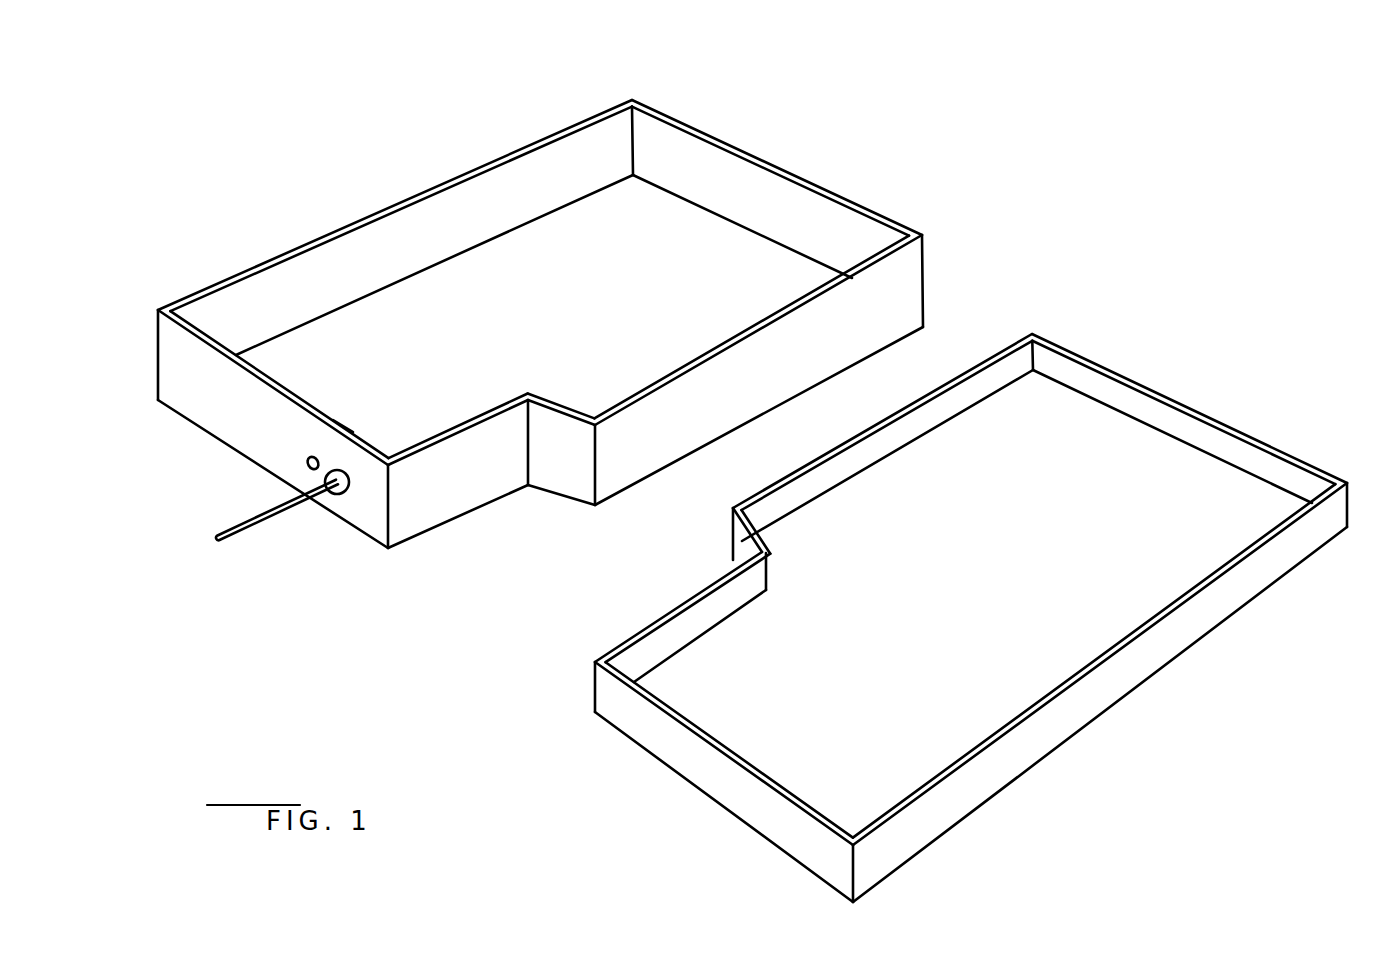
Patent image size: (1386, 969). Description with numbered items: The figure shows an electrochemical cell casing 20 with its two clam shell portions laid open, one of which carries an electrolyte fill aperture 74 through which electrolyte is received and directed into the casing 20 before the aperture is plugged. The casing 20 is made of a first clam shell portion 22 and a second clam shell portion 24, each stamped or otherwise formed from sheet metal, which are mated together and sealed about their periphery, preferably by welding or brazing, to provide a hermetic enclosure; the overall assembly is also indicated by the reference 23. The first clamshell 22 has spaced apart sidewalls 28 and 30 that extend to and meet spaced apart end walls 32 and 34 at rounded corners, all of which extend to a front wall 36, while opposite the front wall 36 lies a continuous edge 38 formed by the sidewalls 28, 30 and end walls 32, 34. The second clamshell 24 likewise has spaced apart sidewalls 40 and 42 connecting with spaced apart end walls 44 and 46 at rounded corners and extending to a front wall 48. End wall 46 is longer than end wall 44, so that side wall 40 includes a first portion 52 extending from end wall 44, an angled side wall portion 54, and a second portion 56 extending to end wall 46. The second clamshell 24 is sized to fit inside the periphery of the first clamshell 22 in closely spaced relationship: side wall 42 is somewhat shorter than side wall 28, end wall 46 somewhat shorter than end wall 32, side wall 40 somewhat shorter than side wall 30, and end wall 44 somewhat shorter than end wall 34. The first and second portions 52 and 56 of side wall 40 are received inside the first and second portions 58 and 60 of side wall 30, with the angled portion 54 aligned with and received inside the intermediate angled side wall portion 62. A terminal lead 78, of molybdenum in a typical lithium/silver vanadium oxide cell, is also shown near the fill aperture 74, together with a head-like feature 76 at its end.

The electrochemical cell casing 20 is at (1067, 786).
The first clam shell portion 22 is at (925, 262).
The lid 23 is at (262, 208).
The second clam shell portion 24 is at (1355, 508).
The sidewall 28 is at (480, 210).
The sidewall 30 is at (798, 357).
The end wall 32 is at (785, 206).
The end wall 34 is at (215, 410).
The front wall 36 is at (640, 210).
The continuous edge 38 is at (876, 207).
The sidewall 40 is at (983, 383).
The sidewall 42 is at (1187, 632).
The end wall 44 is at (690, 767).
The end wall 46 is at (1177, 427).
The front wall 48 is at (1238, 510).
The first portion of side wall 52 is at (664, 633).
The angled side wall portion 54 is at (735, 543).
The second portion of side wall 56 is at (930, 405).
The first portion of side wall 58 is at (477, 470).
The second portion of side wall 60 is at (735, 390).
The intermediate angled side wall portion 62 is at (566, 406).
The electrolyte fill aperture 74 is at (305, 465).
The hinge pin head 76 is at (337, 497).
The terminal lead 78 is at (220, 545).